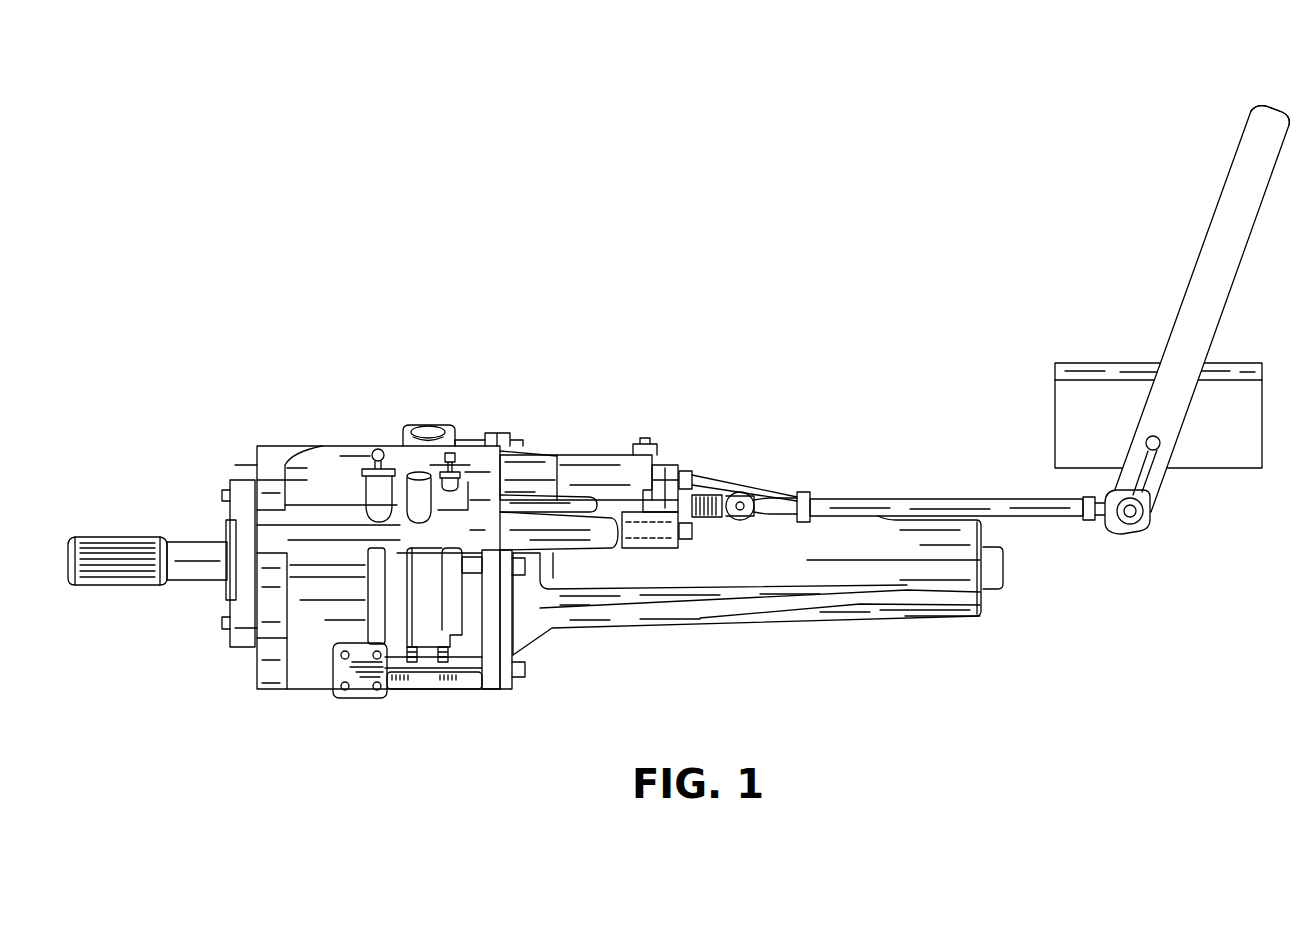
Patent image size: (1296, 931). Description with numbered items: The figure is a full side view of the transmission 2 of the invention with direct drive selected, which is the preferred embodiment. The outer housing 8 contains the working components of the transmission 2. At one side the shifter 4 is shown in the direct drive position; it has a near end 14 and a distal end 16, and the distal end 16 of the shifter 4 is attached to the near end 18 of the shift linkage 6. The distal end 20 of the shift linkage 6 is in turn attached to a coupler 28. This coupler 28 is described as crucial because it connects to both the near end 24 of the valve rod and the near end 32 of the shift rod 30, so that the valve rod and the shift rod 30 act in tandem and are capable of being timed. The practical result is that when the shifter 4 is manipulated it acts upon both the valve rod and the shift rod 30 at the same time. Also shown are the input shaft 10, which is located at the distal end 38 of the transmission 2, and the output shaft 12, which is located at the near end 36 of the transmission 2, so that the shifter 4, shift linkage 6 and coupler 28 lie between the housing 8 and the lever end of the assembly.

The transmission 2 is at (555, 297).
The shifter 4 is at (1207, 242).
The shift linkage 6 is at (914, 499).
The outer housing 8 is at (703, 678).
The input shaft 10 is at (195, 538).
The output shaft 12 is at (1002, 569).
The near end of the shifter 14 is at (1275, 109).
The distal end of the shifter 16 is at (1152, 514).
The near end of the shift linkage 18 is at (1118, 534).
The distal end of the shift linkage 20 is at (743, 503).
The near end of the valve rod 24 is at (686, 540).
The coupler 28 is at (637, 548).
The shift rod 30 is at (672, 455).
The near end of the shift rod 32 is at (687, 477).
The near end of the transmission 36 is at (998, 624).
The distal end of the transmission 38 is at (225, 696).